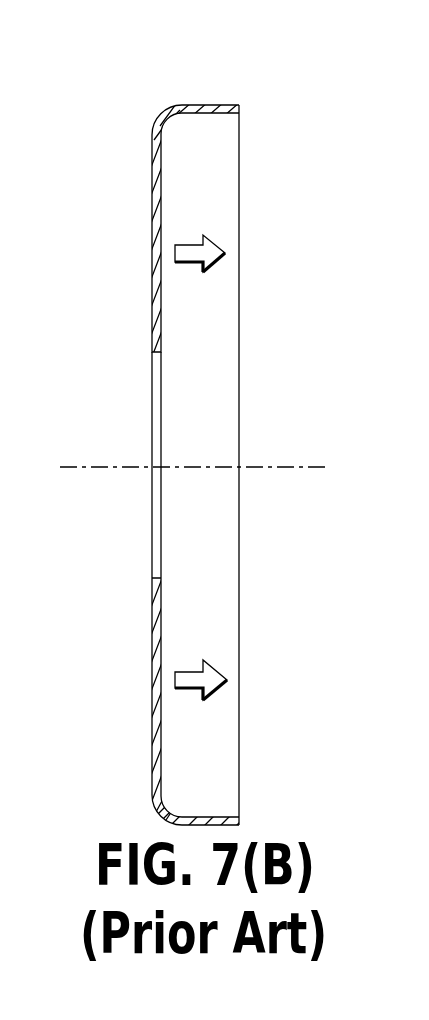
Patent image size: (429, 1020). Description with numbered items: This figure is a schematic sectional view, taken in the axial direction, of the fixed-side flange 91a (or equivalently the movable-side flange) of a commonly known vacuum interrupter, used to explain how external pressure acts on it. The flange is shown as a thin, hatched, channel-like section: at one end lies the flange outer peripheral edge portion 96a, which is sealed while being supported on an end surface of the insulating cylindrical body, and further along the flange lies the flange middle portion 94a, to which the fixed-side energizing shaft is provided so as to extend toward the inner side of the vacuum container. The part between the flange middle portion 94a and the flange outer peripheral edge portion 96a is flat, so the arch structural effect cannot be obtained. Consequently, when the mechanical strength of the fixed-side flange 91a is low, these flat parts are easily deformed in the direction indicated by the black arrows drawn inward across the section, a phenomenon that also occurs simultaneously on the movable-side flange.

The fixed-side flange 91a is at (152, 182).
The outer peripheral edge portion 96a is at (200, 105).
The middle portion 94a is at (155, 628).